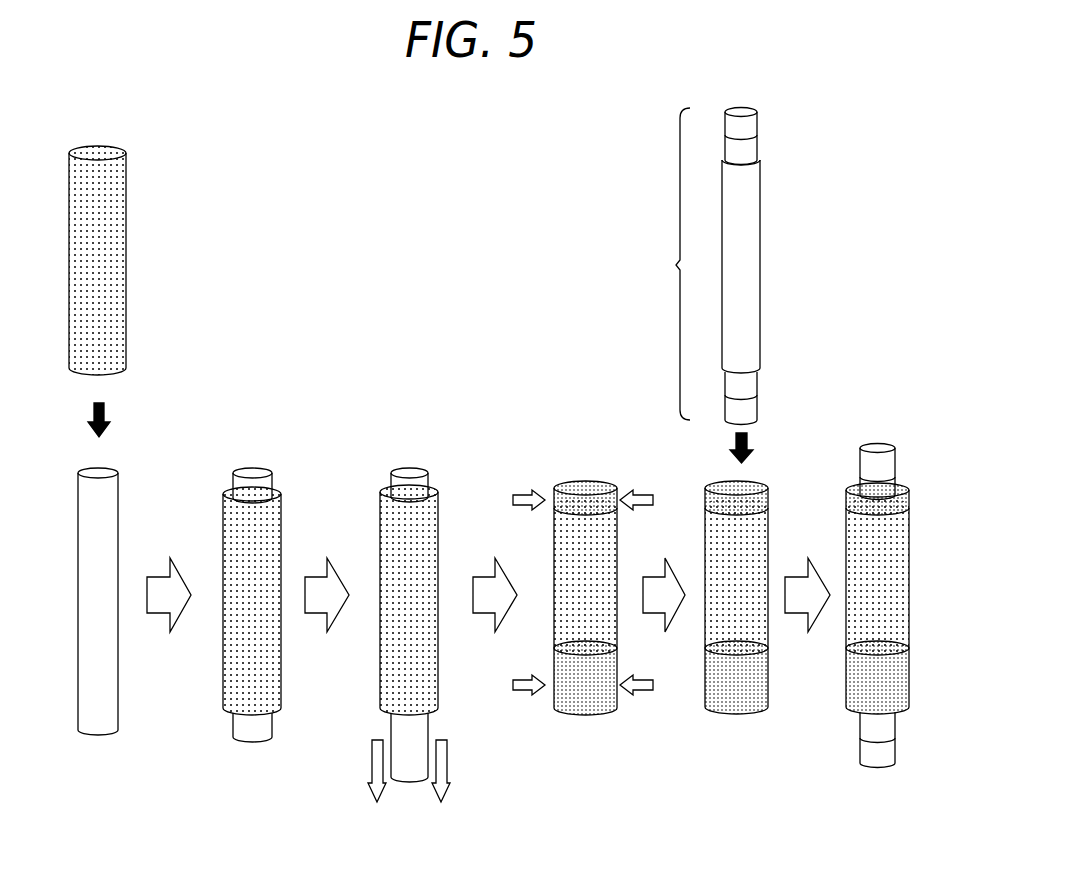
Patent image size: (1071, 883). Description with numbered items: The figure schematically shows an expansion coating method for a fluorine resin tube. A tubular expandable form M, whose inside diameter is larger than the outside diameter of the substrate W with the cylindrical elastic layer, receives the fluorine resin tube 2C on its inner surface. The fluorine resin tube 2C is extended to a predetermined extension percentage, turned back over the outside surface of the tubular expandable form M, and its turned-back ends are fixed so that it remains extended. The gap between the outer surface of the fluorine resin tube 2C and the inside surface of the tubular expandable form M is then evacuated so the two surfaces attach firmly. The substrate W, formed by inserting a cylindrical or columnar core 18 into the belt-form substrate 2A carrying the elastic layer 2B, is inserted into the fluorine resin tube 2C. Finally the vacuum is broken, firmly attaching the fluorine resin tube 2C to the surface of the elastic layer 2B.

The tubular expandable form M is at (126, 268).
The fluorine resin tube 2C is at (103, 727).
The substrate with a cylindrical elastic layer W is at (737, 266).
The core 18 is at (752, 124).
The substrate 2A is at (750, 148).
The elastic layer 2B is at (752, 250).